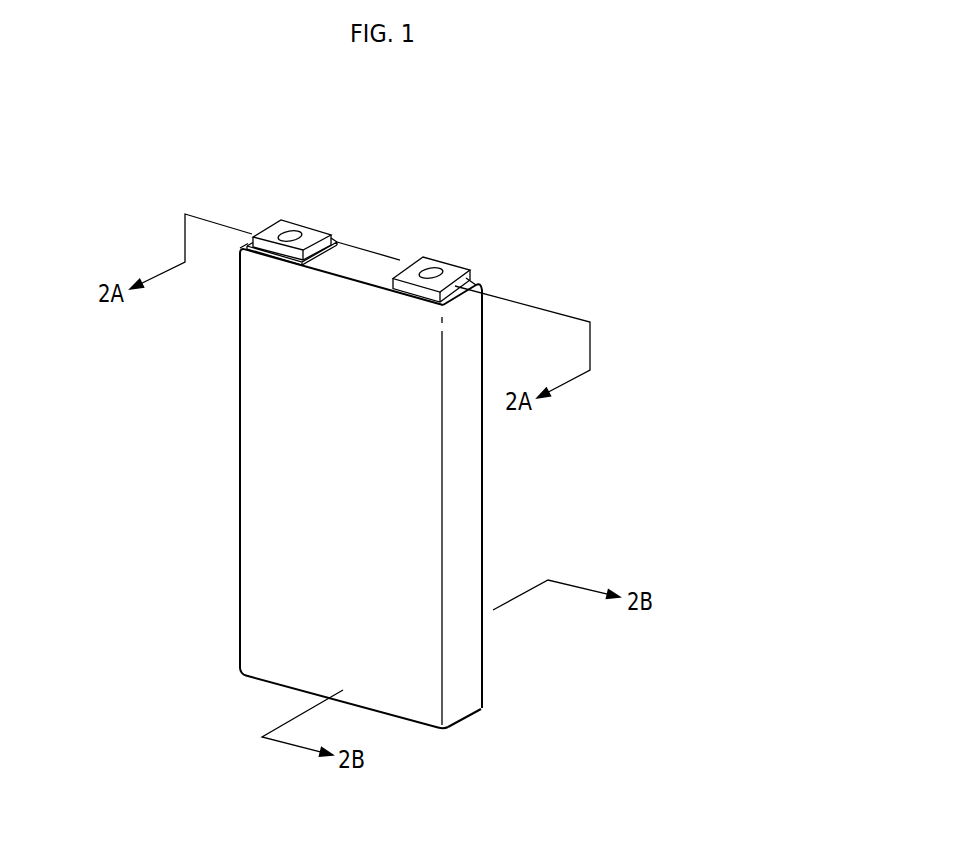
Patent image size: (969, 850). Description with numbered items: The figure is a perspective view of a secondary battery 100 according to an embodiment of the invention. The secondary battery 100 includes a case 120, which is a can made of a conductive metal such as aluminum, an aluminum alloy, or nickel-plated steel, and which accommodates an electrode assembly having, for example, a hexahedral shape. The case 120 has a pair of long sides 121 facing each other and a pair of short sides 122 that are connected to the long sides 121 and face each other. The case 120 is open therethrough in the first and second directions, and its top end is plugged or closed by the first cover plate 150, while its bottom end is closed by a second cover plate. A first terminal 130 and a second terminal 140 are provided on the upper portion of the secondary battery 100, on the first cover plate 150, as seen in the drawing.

The secondary battery 100 is at (450, 465).
The case 120 is at (418, 528).
The long sides 121 is at (413, 707).
The short sides 122 is at (468, 707).
The first terminal 130 is at (281, 218).
The second terminal 140 is at (454, 257).
The first cover plate 150 is at (366, 257).